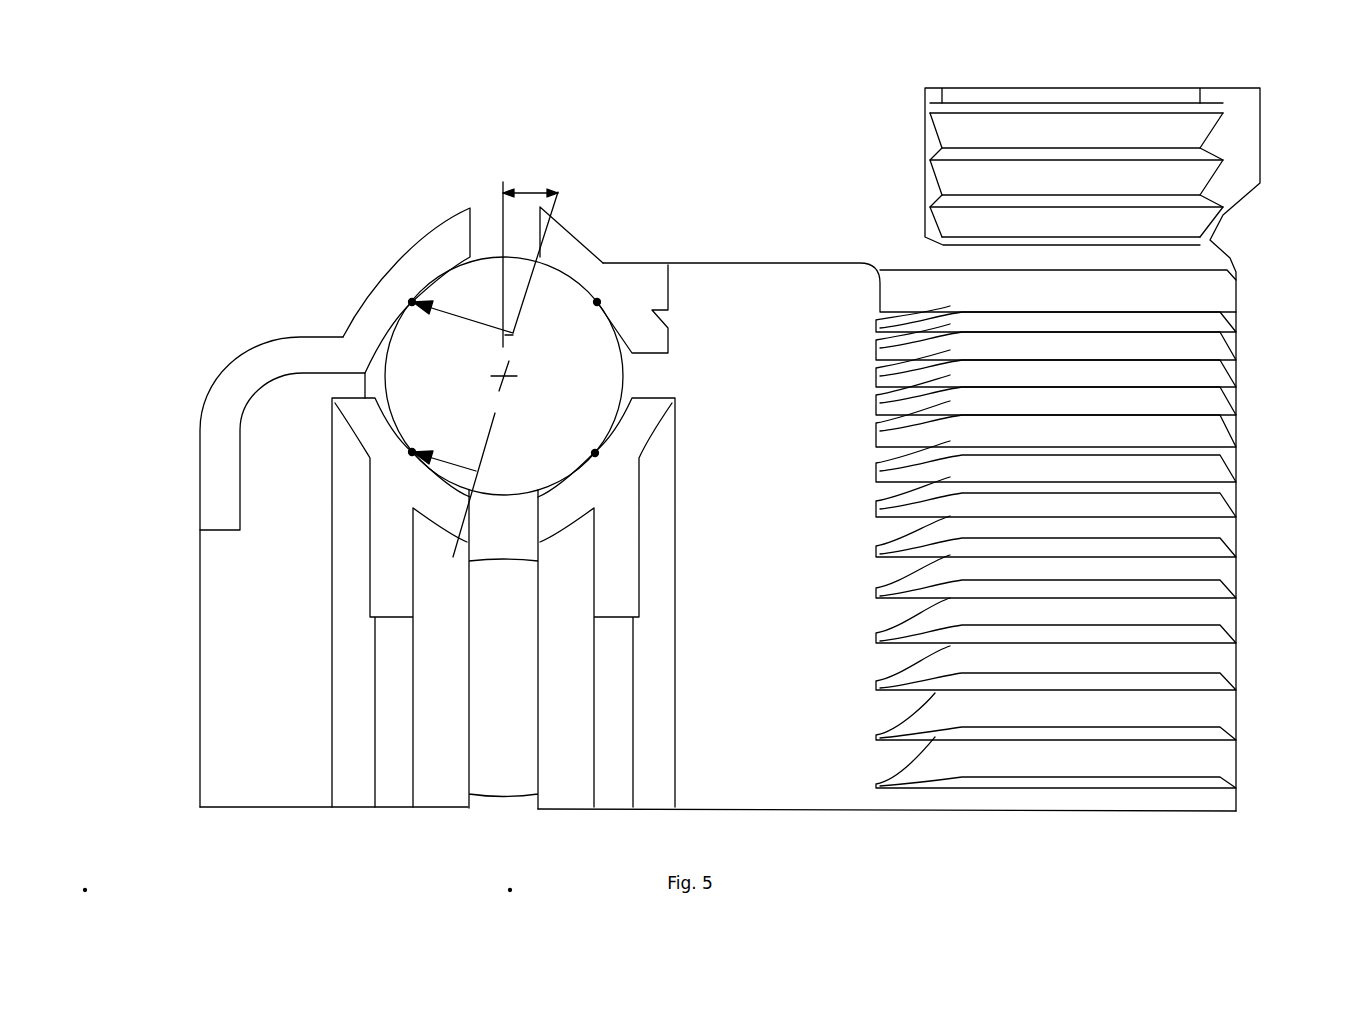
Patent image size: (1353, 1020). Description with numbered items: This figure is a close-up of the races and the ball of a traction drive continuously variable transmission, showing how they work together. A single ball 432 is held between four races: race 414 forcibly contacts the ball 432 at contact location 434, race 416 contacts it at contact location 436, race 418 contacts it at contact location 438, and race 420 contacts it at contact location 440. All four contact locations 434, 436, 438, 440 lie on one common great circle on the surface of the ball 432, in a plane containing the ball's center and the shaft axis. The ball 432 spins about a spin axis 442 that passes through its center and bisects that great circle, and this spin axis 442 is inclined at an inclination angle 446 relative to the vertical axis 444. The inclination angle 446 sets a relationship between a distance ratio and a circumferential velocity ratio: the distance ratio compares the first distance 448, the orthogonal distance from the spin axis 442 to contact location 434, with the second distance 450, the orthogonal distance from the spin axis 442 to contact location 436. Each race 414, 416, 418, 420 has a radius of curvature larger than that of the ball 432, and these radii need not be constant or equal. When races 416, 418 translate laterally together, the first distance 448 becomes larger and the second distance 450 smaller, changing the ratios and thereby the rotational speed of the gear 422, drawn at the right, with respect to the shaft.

The race 414 is at (416, 302).
The race 416 is at (400, 487).
The race 418 is at (600, 263).
The race 420 is at (605, 490).
The gear 422 is at (1236, 460).
The ball 432 is at (503, 478).
The contact location 434 is at (408, 306).
The contact location 436 is at (371, 453).
The contact location 438 is at (597, 302).
The contact location 440 is at (595, 453).
The spin axis 442 is at (528, 294).
The vertical axis 444 is at (503, 182).
The inclination angle 446 is at (532, 187).
The first distance 448 is at (475, 321).
The second distance 450 is at (476, 471).